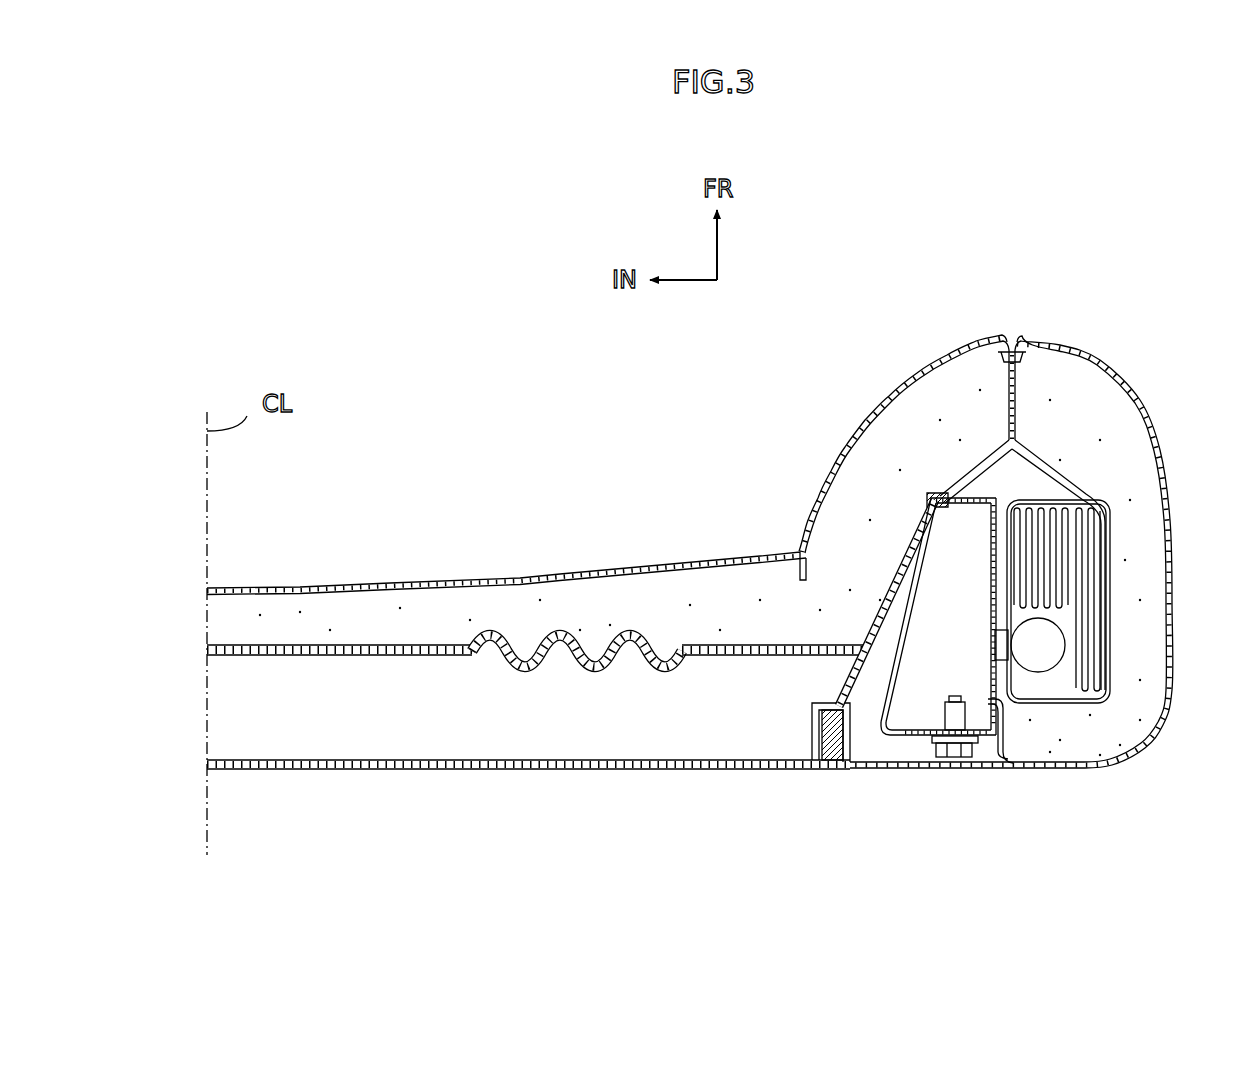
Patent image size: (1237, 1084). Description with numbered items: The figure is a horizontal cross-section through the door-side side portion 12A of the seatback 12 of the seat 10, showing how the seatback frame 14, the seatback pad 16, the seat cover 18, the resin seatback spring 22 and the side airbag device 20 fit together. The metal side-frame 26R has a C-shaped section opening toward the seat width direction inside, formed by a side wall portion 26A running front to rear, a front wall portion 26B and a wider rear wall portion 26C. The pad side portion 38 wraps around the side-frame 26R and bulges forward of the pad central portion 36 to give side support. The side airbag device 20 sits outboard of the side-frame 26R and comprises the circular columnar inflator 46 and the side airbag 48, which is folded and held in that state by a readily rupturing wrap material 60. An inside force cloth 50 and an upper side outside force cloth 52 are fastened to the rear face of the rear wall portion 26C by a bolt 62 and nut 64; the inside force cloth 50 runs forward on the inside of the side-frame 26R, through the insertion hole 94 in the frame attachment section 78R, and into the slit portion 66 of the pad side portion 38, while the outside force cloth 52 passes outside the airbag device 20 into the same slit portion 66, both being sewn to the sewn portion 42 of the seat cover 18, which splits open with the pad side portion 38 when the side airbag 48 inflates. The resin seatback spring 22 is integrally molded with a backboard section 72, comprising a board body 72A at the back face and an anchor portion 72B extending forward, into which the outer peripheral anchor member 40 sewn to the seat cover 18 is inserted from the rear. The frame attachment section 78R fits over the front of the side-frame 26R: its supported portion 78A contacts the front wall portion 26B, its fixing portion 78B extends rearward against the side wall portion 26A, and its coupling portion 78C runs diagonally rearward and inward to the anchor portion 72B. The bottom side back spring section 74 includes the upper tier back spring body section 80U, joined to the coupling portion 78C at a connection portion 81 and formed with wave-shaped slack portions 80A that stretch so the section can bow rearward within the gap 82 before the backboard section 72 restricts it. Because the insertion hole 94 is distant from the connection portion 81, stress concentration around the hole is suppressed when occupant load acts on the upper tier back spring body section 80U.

The vehicle roof structure 10 is at (529, 522).
The seatback 12 is at (512, 490).
The door-side side portion 12A is at (1054, 309).
The seatback frame 14 is at (914, 680).
The seatback pad 16 is at (666, 565).
The seat cover 18 is at (404, 582).
The side airbag device 20 is at (1112, 593).
The resin seatback spring 22 is at (621, 792).
The side wall portion 26A is at (988, 595).
The front wall portion 26B is at (957, 510).
The rear wall portion 26C is at (906, 729).
The side-frame 26R is at (891, 742).
The pad central portion 36 is at (452, 610).
The pad side portion 38 is at (1123, 720).
The outer peripheral anchor member 40 is at (838, 766).
The sewn portion 42 is at (1010, 328).
The inflator 46 is at (1062, 673).
The side airbag 48 is at (1093, 543).
The inside force cloth 50 is at (980, 460).
The upper side outside force cloth 52 is at (1047, 497).
The wrap material 60 is at (1085, 550).
The bolt 62 is at (960, 758).
The nut 64 is at (950, 758).
The slit portion 66 is at (963, 343).
The backboard section 72 is at (362, 773).
The board body 72A is at (485, 772).
The anchor portion 72B is at (812, 712).
The bottom side back spring section 74 is at (537, 595).
The supported portion 78A is at (1020, 378).
The fixing portion 78B is at (1110, 523).
The coupling portion 78C is at (907, 560).
The frame attachment section 78R is at (915, 505).
The slack portion 80A is at (562, 633).
The upper tier back spring body section 80U is at (317, 645).
The connection portion 81 is at (867, 647).
The gap 82 is at (397, 719).
The insertion hole 94 is at (945, 490).